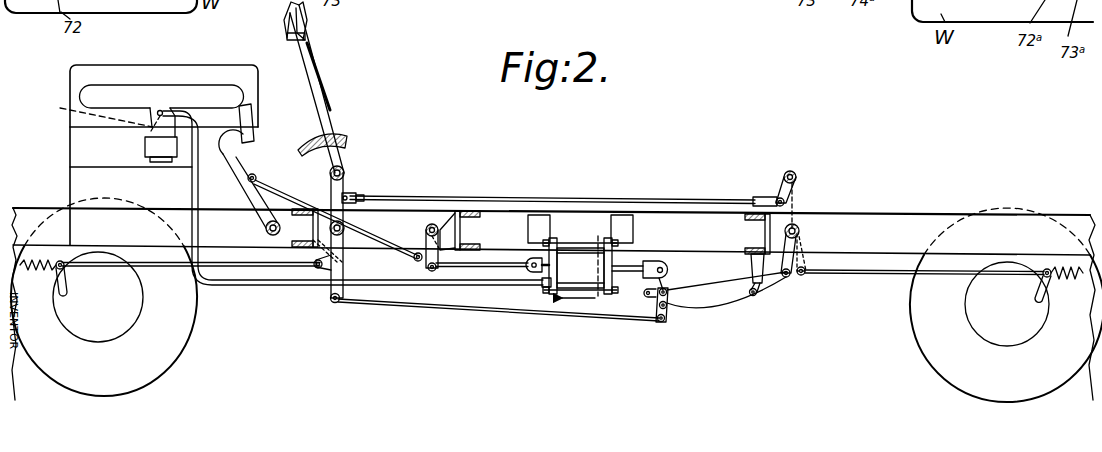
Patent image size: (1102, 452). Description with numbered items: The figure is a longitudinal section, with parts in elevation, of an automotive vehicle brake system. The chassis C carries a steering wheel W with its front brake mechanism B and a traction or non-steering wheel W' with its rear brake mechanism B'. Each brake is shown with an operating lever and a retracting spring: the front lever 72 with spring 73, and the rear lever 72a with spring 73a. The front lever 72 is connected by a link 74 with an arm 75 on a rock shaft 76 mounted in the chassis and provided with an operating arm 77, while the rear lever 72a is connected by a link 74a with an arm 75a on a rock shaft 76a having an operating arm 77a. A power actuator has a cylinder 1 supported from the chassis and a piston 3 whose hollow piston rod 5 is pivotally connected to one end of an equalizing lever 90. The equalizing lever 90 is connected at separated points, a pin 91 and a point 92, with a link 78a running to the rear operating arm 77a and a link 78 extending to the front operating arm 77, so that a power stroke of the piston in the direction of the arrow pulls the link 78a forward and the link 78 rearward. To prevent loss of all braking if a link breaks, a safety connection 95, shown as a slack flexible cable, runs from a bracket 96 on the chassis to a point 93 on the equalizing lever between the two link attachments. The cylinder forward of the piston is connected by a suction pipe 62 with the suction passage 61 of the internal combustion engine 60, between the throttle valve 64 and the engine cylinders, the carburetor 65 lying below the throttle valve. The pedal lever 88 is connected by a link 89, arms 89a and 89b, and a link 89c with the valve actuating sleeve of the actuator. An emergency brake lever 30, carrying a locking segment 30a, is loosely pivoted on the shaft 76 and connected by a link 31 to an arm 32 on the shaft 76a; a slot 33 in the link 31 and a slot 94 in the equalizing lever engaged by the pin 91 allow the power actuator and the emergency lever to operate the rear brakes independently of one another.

The cylinder 1 is at (570, 250).
The piston 3 is at (600, 248).
The piston rod 5 is at (630, 276).
The emergency brake lever 30 is at (332, 128).
The locking segment 30a is at (352, 144).
The link 31 is at (663, 198).
The arm 32 is at (785, 177).
The slot 33 is at (774, 198).
The internal combustion engine 60 is at (143, 78).
The suction passage 61 is at (147, 100).
The suction pipe 62 is at (371, 282).
The throttle valve 64 is at (62, 108).
The carburetor 65 is at (145, 146).
The operating lever 72 is at (69, 283).
The operating lever 72a is at (1051, 288).
The retracting spring 73 is at (38, 284).
The retracting spring 73a is at (1068, 285).
The link 74 is at (236, 268).
The link 74a is at (880, 274).
The arm 75 is at (318, 262).
The arm 75a is at (812, 258).
The rock shaft 76 is at (330, 174).
The rock shaft 76a is at (797, 228).
The operating arm 77 is at (339, 300).
The operating arm 77a is at (781, 270).
The link 78 is at (512, 309).
The link 78a is at (733, 285).
The pedal lever 88 is at (243, 162).
The link 89 is at (362, 220).
The arm 89a is at (426, 233).
The arm 89b is at (426, 267).
The link 89c is at (494, 262).
The equalizing lever 90 is at (668, 271).
The pin 91 is at (670, 298).
The point of attachment 92 is at (664, 310).
The point 93 is at (659, 322).
The slot 94 is at (648, 297).
The safety connection 95 is at (721, 312).
The bracket 96 is at (750, 262).
The front wheel brake mechanism B is at (98, 297).
The rear wheel brake mechanism B' is at (1007, 304).
The steering wheel W is at (104, 297).
The traction wheel W' is at (991, 305).
The chassis C is at (866, 222).